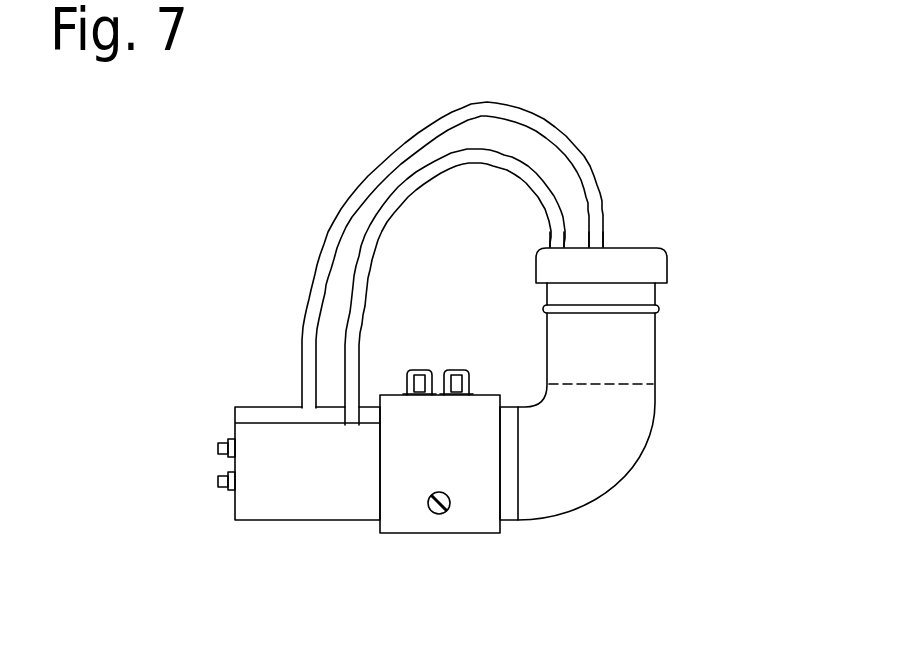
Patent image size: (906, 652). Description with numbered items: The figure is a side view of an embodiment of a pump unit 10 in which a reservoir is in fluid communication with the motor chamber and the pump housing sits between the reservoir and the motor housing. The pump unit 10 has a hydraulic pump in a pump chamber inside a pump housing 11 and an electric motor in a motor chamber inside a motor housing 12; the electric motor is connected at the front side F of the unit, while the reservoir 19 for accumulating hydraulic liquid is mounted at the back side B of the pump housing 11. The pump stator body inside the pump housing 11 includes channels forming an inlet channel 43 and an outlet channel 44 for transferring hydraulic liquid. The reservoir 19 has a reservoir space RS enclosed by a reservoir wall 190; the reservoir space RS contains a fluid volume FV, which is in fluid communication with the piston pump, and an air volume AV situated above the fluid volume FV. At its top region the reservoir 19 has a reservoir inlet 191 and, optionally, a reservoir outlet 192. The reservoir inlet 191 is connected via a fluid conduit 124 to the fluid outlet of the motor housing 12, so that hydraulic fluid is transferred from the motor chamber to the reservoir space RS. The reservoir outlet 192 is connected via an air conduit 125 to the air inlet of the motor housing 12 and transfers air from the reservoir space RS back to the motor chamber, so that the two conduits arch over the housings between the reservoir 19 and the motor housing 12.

The pump unit 10 is at (306, 247).
The pump housing 11 is at (452, 520).
The motor housing 12 is at (313, 478).
The reservoir 19 is at (677, 249).
The inlet channel 43 is at (418, 378).
The outlet channel 44 is at (457, 378).
The fluid conduit 124 is at (367, 198).
The air conduit 125 is at (422, 180).
The reservoir wall 190 is at (590, 500).
The reservoir inlet 191 is at (605, 246).
The reservoir outlet 192 is at (550, 245).
The air volume AV is at (620, 347).
The fluid volume FV is at (625, 425).
The reservoir space RS is at (588, 459).
The back side B is at (738, 414).
The front side F is at (155, 425).